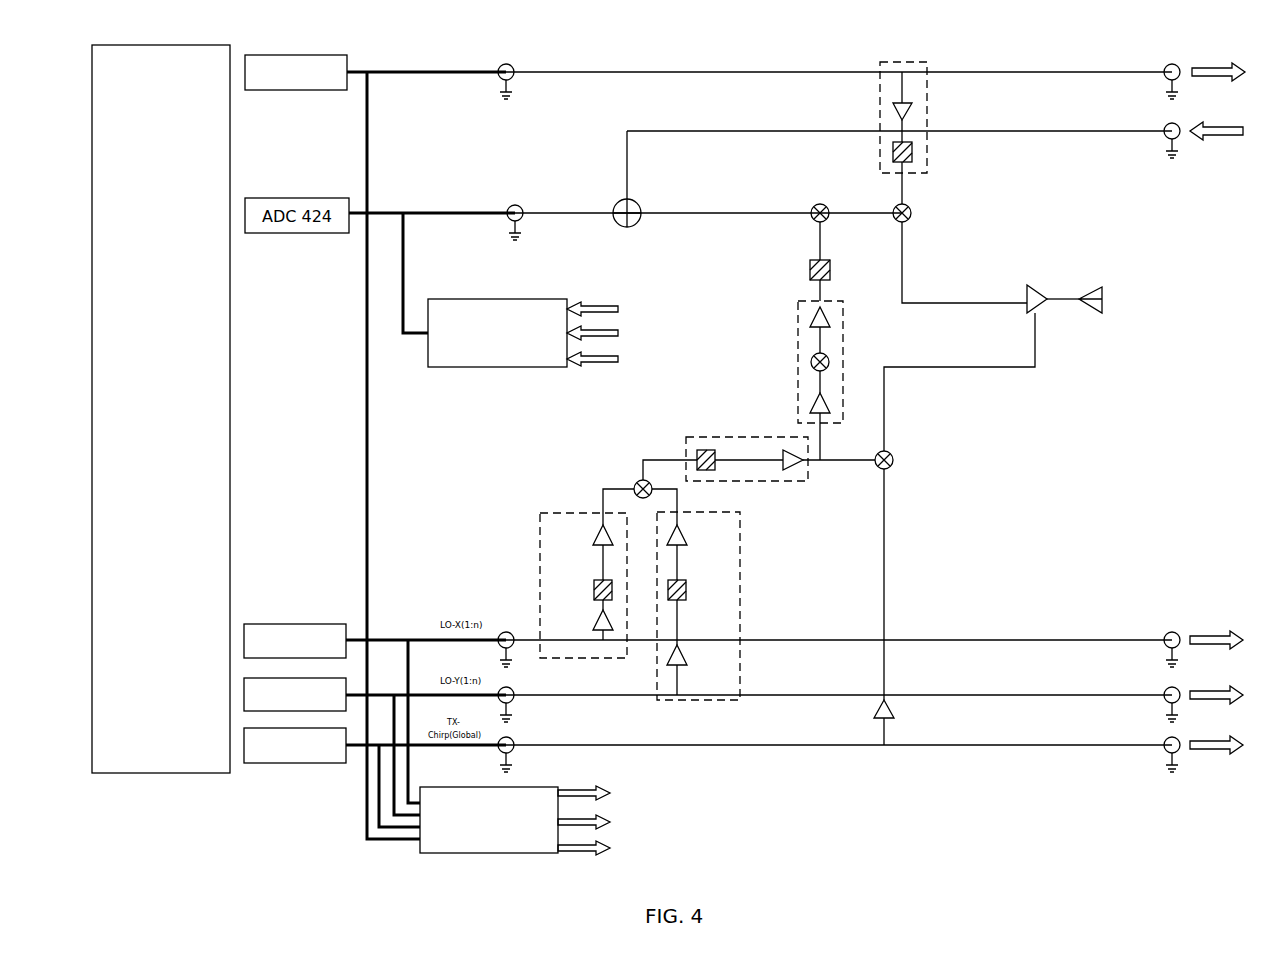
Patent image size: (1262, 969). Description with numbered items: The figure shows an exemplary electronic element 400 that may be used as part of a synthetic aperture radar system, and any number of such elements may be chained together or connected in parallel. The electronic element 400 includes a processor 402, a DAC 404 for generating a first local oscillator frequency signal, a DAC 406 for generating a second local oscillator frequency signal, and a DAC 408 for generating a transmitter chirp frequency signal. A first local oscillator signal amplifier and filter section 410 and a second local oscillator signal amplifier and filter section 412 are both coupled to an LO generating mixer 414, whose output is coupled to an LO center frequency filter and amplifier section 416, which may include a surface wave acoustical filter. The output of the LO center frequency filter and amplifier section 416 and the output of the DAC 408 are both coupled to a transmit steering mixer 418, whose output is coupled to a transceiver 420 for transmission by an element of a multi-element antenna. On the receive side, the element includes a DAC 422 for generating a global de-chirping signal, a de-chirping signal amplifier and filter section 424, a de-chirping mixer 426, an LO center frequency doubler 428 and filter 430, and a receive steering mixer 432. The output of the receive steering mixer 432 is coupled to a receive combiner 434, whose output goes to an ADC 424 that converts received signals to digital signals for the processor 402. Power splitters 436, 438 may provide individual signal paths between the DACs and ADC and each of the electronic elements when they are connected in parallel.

The electronic element 400 is at (693, 36).
The processor 402 is at (161, 409).
The DAC 404 is at (375, 641).
The DAC 406 is at (375, 694).
The DAC 408 is at (375, 745).
The LO-X(n) signal amplifier and filter section 410 is at (540, 585).
The LO-Y(n) signal amplifier and filter section 412 is at (740, 604).
The LO generating mixer 414 is at (634, 482).
The LO center frequency filter and amplifier section 416 is at (732, 437).
The transmit steering mixer 418 is at (893, 463).
The transceiver 420 is at (1048, 310).
The DAC 422 is at (375, 72).
The de-chirping signal amplifier and filter section 424 is at (927, 130).
The de-chirping mixer 426 is at (911, 218).
The LO center frequency doubler 428 is at (798, 362).
The filter 430 is at (810, 270).
The receive steering mixer 432 is at (811, 206).
The receive combiner 434 is at (614, 205).
The power splitter 436 is at (538, 821).
The power splitter 438 is at (546, 334).